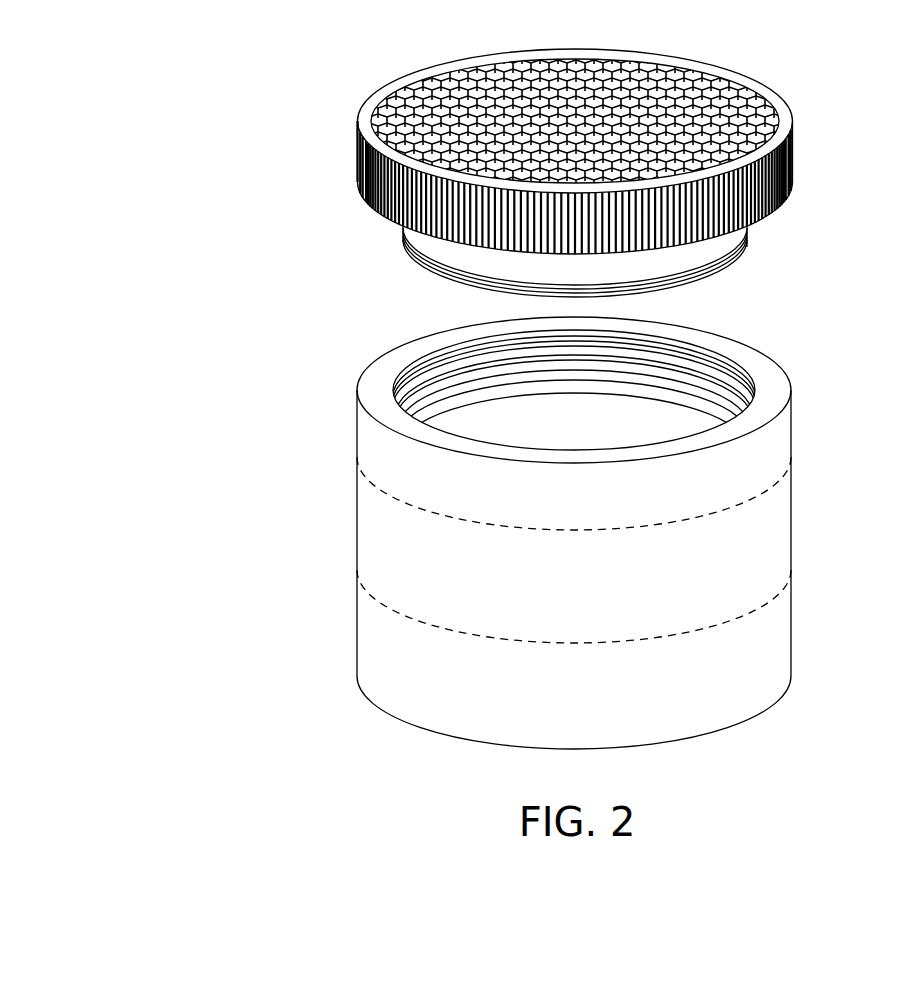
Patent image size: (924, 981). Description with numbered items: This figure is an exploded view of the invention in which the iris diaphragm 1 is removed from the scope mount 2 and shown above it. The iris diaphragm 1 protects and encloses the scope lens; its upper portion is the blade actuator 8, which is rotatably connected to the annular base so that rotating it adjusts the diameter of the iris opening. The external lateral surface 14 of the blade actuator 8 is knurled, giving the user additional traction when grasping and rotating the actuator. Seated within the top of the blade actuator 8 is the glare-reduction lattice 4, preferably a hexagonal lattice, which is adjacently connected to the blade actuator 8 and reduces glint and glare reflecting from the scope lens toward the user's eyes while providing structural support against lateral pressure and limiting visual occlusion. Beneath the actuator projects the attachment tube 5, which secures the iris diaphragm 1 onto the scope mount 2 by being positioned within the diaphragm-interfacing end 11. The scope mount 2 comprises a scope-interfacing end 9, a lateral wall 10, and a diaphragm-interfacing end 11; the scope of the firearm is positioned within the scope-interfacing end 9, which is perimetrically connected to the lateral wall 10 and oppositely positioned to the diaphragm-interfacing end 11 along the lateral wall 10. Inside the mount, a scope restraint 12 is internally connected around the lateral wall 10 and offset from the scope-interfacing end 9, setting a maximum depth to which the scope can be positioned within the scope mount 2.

The iris diaphragm 1 is at (236, 70).
The scope mount 2 is at (265, 343).
The glare-reduction lattice 4 is at (408, 98).
The attachment tube 5 is at (403, 236).
The blade actuator 8 is at (770, 102).
The scope-interfacing end 9 is at (785, 641).
The lateral wall 10 is at (772, 558).
The diaphragm-interfacing end 11 is at (780, 428).
The scope restraint 12 is at (553, 413).
The external lateral surface 14 is at (790, 166).